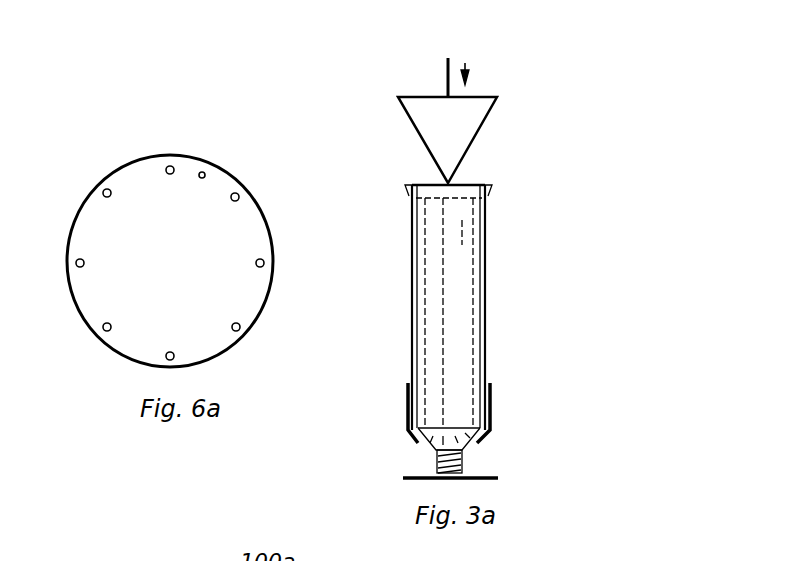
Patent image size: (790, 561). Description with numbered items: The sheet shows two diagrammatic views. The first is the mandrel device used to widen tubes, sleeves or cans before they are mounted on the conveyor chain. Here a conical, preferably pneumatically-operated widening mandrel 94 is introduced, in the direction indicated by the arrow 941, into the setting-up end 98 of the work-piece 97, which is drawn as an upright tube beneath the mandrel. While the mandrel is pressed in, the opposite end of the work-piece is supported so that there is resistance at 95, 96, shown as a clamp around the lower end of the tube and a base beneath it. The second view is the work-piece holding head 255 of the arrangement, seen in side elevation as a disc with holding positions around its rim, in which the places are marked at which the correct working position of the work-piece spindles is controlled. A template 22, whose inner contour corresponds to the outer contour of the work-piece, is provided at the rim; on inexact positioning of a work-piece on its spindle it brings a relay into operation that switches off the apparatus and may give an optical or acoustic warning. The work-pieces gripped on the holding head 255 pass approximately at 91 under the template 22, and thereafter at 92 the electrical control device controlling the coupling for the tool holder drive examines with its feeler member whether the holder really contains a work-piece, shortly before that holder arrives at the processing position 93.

In FIG. 6A, the template 22 is at (201, 171).
In FIG. 6A, the passing place under template 91 is at (205, 207).
In FIG. 6A, the feeler examination place 92 is at (240, 197).
In FIG. 6A, the processing position 93 is at (263, 266).
In FIG. 6A, the work-piece holding head 255 is at (148, 320).
In FIG. 3A, the widening mandrel 94 is at (462, 140).
In FIG. 3A, the arrow 941 is at (472, 77).
In FIG. 3A, the setting-up end 98 is at (488, 188).
In FIG. 3A, the work-piece 97 is at (485, 292).
In FIG. 3A, the resistance element 95 is at (492, 395).
In FIG. 3A, the resistance element 96 is at (490, 473).